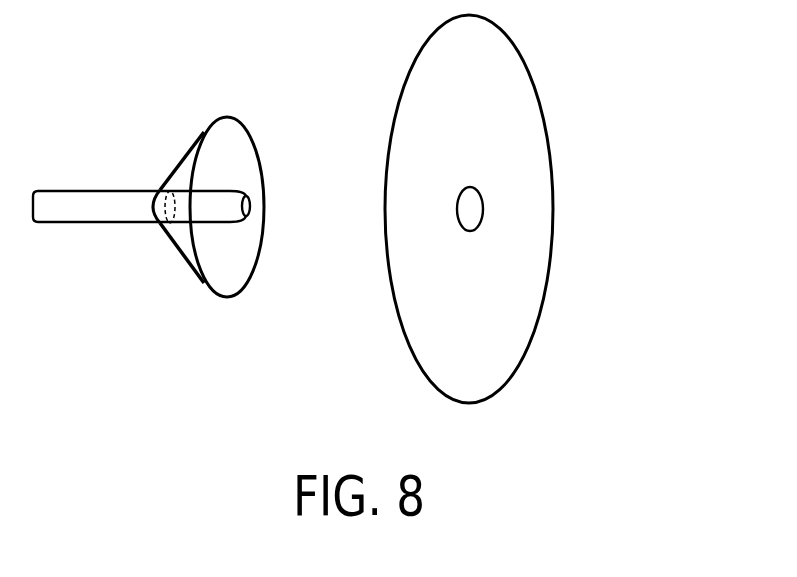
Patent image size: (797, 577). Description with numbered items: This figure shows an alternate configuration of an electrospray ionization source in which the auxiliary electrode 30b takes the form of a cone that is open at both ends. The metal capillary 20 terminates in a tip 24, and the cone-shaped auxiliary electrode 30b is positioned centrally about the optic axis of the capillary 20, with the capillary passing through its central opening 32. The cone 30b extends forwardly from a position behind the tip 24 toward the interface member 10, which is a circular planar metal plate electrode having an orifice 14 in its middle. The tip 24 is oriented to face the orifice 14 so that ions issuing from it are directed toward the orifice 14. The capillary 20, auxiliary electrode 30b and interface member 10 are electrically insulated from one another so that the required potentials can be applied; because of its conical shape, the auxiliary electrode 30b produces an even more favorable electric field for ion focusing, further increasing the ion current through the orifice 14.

The interface member 10 is at (546, 300).
The orifice 14 is at (483, 210).
The metal capillary 20 is at (88, 190).
The tip 24 is at (250, 198).
The auxiliary electrode 30b is at (226, 298).
The central opening 32 is at (168, 227).